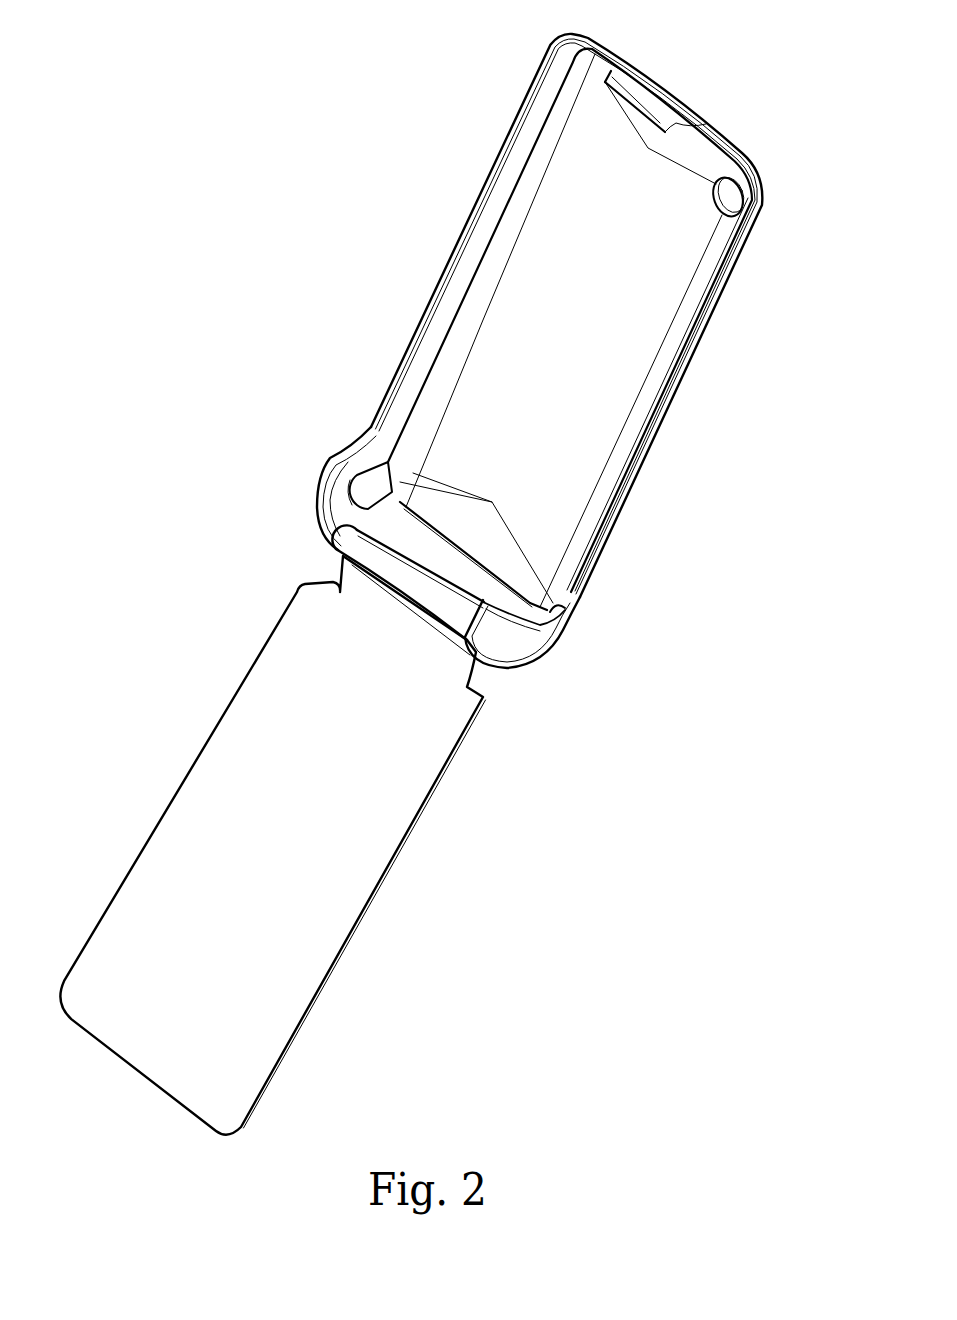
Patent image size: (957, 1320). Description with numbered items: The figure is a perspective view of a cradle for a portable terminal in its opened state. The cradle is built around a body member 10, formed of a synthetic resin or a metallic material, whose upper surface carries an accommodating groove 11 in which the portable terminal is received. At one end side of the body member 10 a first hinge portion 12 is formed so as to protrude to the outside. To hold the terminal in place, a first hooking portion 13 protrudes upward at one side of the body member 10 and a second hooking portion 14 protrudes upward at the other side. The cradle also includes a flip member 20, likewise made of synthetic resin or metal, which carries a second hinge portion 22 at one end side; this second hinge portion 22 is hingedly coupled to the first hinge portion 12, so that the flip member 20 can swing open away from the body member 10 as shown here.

The body member 10 is at (667, 422).
The accommodating groove 11 is at (565, 440).
The first hinge portion 12 is at (338, 508).
The first hooking portion 13 is at (652, 98).
The second hooking portion 14 is at (353, 474).
The flip member 20 is at (241, 799).
The second hinge portion 22 is at (343, 555).